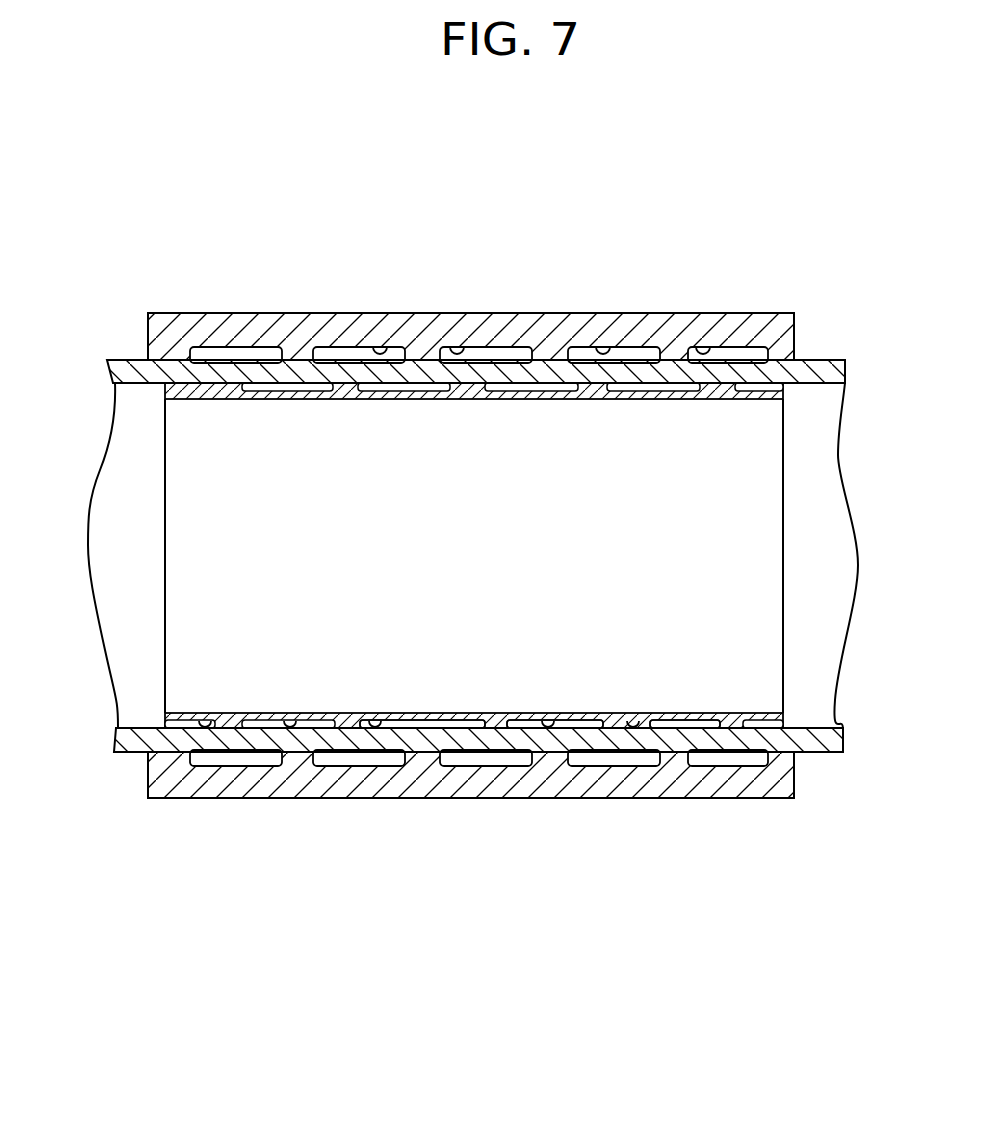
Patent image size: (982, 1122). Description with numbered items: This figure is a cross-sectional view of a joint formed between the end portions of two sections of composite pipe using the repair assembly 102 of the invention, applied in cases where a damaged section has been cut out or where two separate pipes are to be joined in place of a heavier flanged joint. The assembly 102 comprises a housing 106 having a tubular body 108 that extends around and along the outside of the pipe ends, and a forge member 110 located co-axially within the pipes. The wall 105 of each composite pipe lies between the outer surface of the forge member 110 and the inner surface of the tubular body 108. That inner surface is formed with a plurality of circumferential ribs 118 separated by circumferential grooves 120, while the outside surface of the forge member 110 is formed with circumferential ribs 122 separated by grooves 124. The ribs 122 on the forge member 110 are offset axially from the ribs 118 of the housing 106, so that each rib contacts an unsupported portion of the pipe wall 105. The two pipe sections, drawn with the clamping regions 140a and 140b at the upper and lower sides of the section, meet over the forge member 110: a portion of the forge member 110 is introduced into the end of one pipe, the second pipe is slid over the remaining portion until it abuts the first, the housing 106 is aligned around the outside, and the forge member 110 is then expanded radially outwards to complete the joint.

The repair assembly 102 is at (493, 321).
The wall 105 is at (452, 745).
The housing 106 is at (445, 780).
The tubular body 108 is at (573, 792).
The forge member 110 is at (462, 402).
The circumferential ribs 118 is at (668, 352).
The circumferential grooves 120 is at (457, 347).
The circumferential ribs 122 is at (492, 712).
The grooves 124 is at (635, 725).
The upper clamping plate 140a is at (818, 375).
The lower clamping plate 140b is at (160, 740).